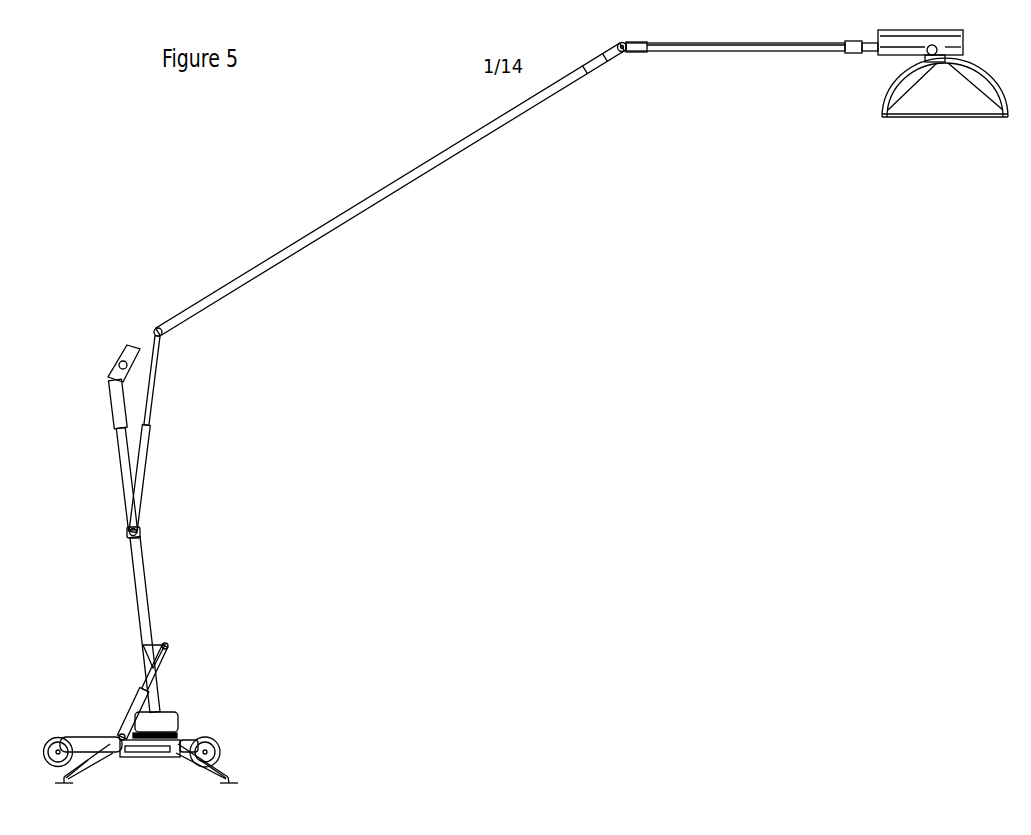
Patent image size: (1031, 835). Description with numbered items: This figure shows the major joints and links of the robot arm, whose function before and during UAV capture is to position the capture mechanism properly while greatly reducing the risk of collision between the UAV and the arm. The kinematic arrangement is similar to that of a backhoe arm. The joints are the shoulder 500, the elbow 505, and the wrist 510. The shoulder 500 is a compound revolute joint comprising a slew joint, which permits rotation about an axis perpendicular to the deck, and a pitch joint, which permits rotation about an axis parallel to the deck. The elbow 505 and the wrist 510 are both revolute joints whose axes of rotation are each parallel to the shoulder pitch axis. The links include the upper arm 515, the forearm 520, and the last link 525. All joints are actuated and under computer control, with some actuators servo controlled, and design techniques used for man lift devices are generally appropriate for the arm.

The shoulder 500 is at (197, 717).
The elbow 505 is at (104, 356).
The wrist 510 is at (617, 43).
The upper arm 515 is at (155, 569).
The forearm 520 is at (400, 198).
The last link 525 is at (769, 56).